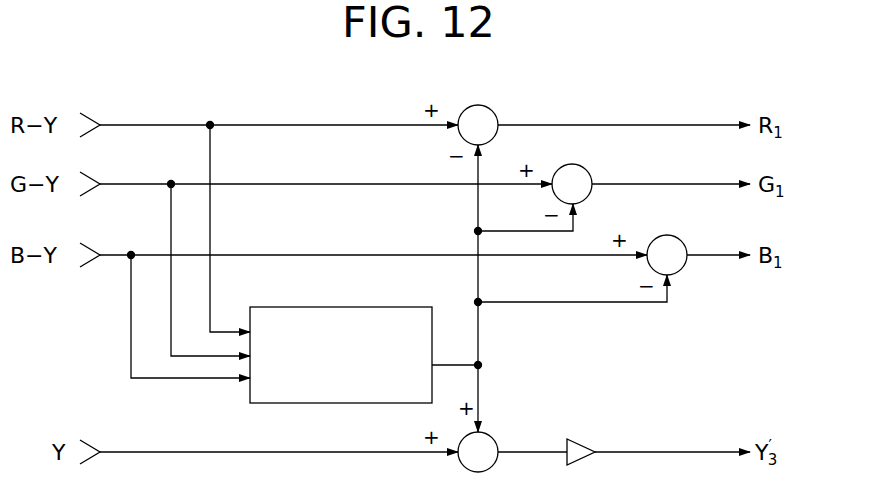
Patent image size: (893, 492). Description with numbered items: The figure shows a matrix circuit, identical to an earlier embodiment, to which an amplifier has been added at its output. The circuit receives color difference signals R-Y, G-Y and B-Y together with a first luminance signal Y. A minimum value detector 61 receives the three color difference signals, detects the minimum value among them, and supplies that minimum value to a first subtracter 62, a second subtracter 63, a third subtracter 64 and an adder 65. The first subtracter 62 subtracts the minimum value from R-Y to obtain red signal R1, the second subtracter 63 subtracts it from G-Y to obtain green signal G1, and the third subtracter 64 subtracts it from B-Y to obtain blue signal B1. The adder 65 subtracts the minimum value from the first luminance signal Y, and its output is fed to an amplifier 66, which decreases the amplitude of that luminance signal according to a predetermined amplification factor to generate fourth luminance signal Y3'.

The minimum value detector 61 is at (343, 307).
The first subtracter 62 is at (490, 107).
The second subtracter 63 is at (584, 166).
The third subtracter 64 is at (678, 238).
The adder 65 is at (492, 438).
The amplifier 66 is at (580, 440).